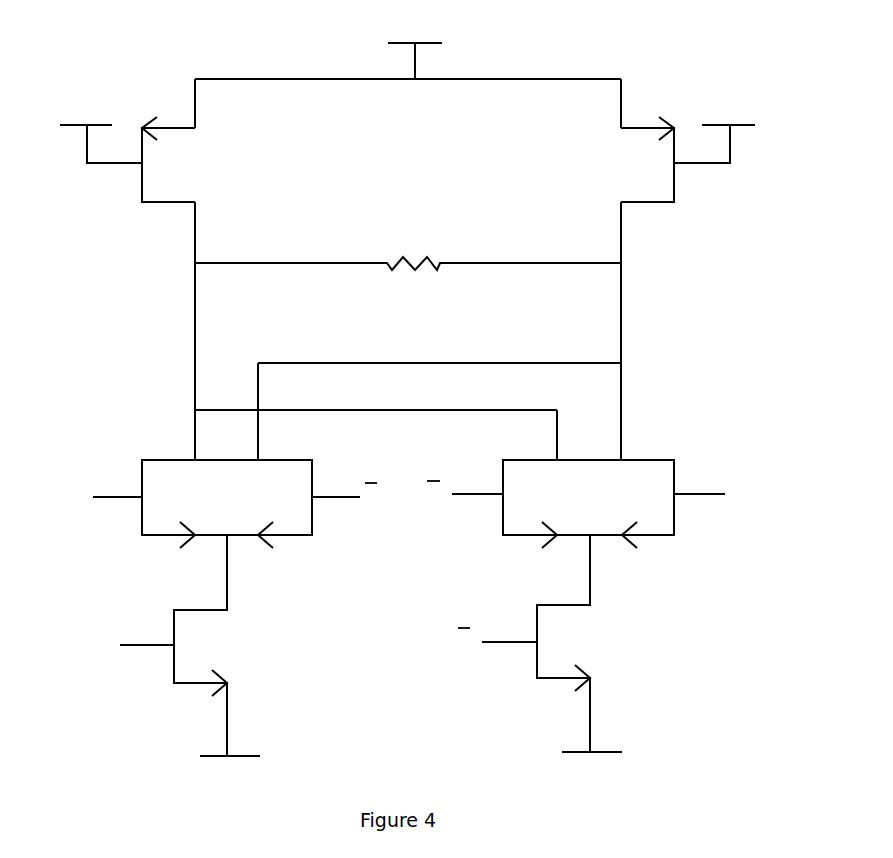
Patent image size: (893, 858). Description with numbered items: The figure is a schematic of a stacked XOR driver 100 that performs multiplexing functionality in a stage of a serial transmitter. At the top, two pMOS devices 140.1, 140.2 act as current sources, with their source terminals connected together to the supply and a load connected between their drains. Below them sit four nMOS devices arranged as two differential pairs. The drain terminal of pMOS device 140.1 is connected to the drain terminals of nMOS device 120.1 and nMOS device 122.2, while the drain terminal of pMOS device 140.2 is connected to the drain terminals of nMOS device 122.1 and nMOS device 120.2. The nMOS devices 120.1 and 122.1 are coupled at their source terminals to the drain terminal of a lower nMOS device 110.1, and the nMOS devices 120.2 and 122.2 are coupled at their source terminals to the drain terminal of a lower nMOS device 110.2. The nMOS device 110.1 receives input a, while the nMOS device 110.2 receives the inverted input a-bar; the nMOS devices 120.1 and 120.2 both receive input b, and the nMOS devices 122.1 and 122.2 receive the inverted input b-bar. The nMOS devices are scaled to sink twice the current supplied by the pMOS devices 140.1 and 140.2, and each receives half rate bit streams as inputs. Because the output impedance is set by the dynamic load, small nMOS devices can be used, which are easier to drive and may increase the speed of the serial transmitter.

The XOR driver 100 is at (408, 306).
The pMOS device 140.1 is at (161, 159).
The pMOS device 140.2 is at (662, 159).
The nMOS device 120.1 is at (150, 504).
The nMOS device 122.1 is at (286, 504).
The nMOS device 122.2 is at (508, 504).
The nMOS device 120.2 is at (651, 504).
The nMOS device 110.1 is at (176, 645).
The nMOS device 110.2 is at (544, 643).